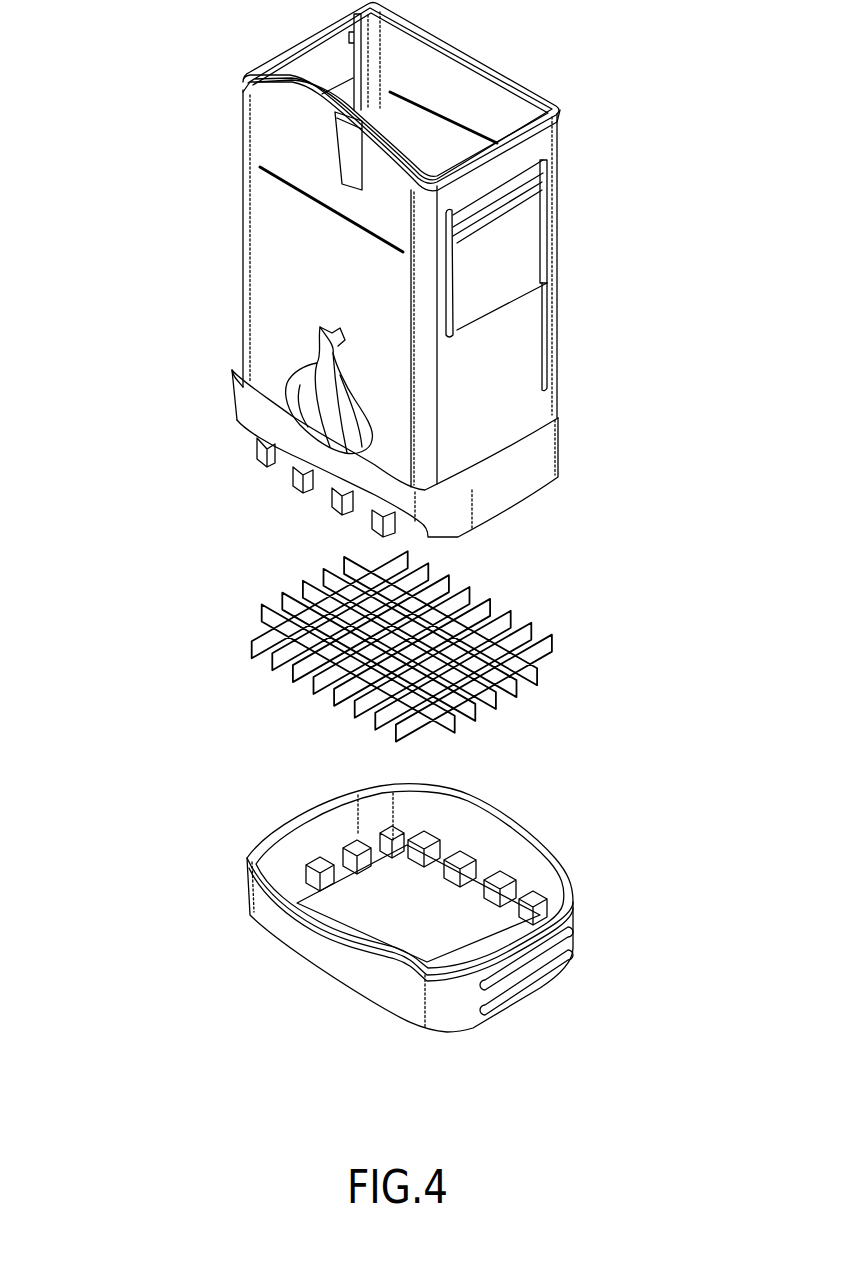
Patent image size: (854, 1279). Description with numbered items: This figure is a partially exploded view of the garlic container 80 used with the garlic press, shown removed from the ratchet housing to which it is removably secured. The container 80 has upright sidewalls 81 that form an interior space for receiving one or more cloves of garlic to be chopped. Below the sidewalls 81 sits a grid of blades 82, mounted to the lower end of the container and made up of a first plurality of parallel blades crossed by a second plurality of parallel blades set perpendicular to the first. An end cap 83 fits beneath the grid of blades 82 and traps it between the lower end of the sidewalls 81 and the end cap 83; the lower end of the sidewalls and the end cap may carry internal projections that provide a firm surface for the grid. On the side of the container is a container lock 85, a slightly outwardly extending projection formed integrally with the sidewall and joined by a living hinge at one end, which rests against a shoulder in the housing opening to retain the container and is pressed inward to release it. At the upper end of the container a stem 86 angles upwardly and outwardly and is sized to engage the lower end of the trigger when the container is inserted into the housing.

The container 80 is at (378, 270).
The upright sidewalls 81 is at (488, 368).
The grid of blades 82 is at (540, 680).
The end cap 83 is at (553, 850).
The container lock 85 is at (508, 250).
The stem 86 is at (340, 150).